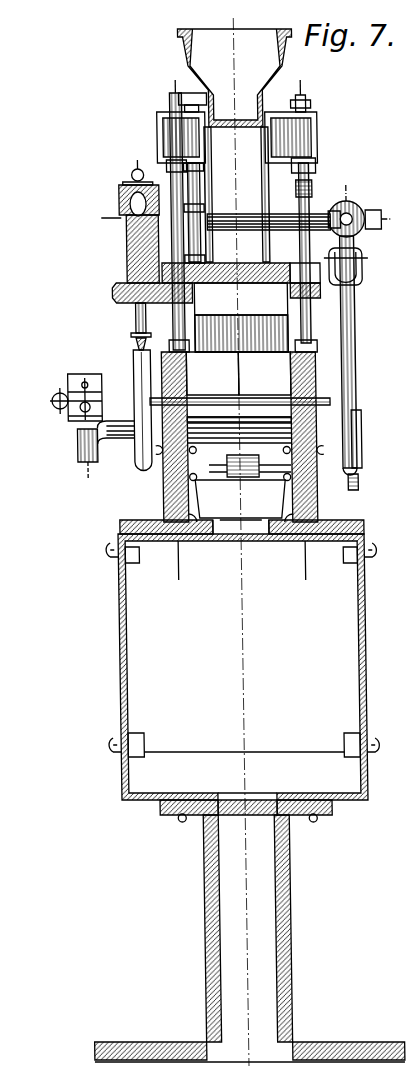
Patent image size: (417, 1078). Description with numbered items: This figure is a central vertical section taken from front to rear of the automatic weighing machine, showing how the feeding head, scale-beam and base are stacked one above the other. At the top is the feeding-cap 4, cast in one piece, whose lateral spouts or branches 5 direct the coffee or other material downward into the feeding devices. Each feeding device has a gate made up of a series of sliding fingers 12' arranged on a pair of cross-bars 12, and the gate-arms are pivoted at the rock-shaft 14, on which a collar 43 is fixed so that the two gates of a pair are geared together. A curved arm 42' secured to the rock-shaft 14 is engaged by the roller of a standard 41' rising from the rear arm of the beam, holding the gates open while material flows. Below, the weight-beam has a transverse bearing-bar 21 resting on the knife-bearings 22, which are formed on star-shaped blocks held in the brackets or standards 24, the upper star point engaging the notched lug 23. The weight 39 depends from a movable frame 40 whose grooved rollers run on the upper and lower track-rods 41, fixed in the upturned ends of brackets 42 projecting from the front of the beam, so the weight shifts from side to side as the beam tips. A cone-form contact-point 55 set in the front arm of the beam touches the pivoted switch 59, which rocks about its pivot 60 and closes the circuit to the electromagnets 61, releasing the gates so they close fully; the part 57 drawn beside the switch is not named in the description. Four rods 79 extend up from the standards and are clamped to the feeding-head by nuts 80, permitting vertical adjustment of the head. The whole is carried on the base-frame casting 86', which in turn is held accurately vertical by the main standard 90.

The feeding-cap 4 is at (234, 78).
The lateral spouts or branches 5 is at (237, 194).
The cross-bars 12 is at (241, 317).
The sliding fingers 12' is at (251, 299).
The rock-shaft 14 is at (363, 216).
The transverse bearing-bar 21 is at (212, 373).
The knife-bearings 22 is at (286, 412).
The notched lug 23 is at (322, 396).
The brackets or standards 24 is at (158, 494).
The weight 39 is at (76, 460).
The movable frame 40 is at (66, 396).
The track-rods 41 is at (92, 403).
The standard 41' is at (368, 363).
The brackets 42 is at (113, 463).
The curved arm 42' is at (368, 261).
The collar 43 is at (316, 206).
The contact-point 55 is at (131, 343).
The stem 57 is at (130, 316).
The switch 59 is at (124, 262).
The pivot 60 is at (110, 292).
The electromagnets 61 is at (183, 146).
The rods 79 is at (312, 182).
The nuts 80 is at (303, 108).
The casting 86' is at (243, 678).
The main standard 90 is at (300, 1040).